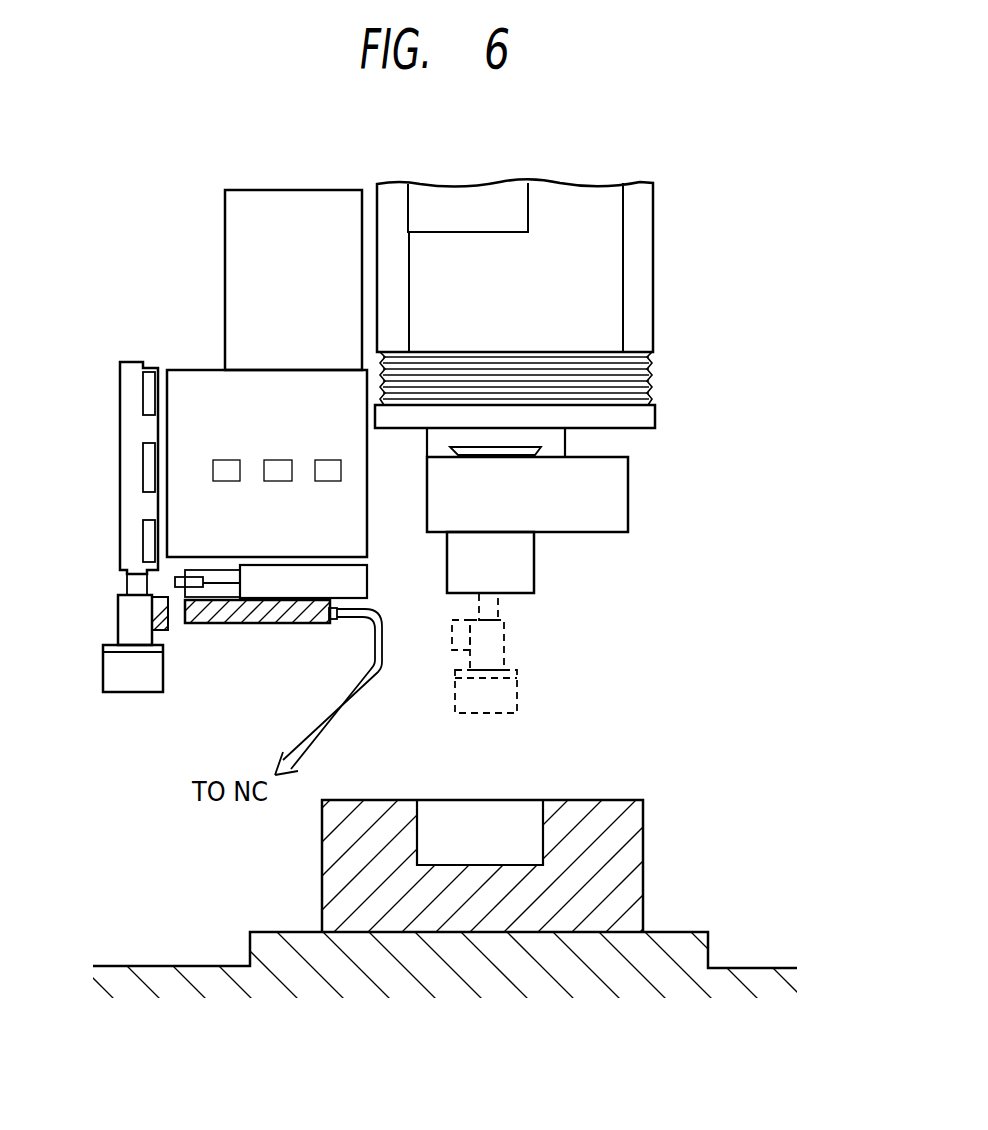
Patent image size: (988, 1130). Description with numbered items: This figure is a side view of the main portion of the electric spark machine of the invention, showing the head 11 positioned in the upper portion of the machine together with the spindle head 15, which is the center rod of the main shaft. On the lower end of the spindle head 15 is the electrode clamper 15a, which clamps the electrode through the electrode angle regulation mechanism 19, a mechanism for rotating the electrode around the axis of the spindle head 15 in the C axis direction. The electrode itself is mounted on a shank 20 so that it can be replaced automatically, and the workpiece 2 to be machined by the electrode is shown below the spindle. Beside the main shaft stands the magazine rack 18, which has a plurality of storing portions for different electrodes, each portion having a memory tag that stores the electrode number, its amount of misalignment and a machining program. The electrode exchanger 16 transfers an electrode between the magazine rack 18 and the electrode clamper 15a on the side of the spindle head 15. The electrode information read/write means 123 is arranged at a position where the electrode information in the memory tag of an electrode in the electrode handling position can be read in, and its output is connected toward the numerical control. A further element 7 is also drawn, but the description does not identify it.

The workpiece 2 is at (605, 800).
The contact sensor 7 is at (220, 584).
The head 11 is at (600, 297).
The spindle head 15 is at (640, 421).
The electrode clamper 15a is at (527, 571).
The electrode exchanger 16 is at (190, 386).
The magazine rack 18 is at (120, 437).
The electrode angle regulation mechanism 19 is at (620, 503).
The shank 20 is at (126, 626).
The electrode information read/write means 123 is at (287, 625).